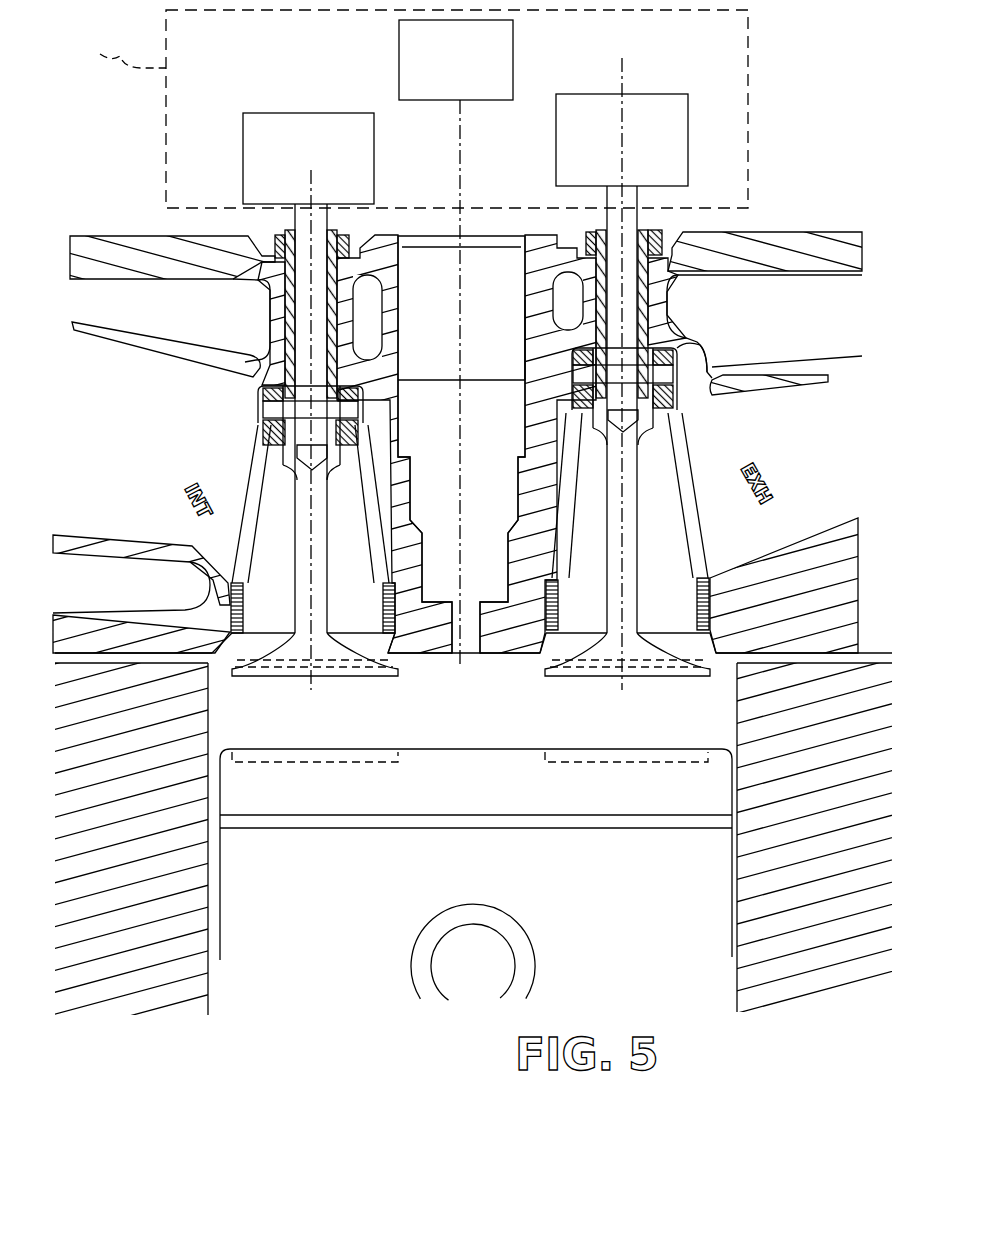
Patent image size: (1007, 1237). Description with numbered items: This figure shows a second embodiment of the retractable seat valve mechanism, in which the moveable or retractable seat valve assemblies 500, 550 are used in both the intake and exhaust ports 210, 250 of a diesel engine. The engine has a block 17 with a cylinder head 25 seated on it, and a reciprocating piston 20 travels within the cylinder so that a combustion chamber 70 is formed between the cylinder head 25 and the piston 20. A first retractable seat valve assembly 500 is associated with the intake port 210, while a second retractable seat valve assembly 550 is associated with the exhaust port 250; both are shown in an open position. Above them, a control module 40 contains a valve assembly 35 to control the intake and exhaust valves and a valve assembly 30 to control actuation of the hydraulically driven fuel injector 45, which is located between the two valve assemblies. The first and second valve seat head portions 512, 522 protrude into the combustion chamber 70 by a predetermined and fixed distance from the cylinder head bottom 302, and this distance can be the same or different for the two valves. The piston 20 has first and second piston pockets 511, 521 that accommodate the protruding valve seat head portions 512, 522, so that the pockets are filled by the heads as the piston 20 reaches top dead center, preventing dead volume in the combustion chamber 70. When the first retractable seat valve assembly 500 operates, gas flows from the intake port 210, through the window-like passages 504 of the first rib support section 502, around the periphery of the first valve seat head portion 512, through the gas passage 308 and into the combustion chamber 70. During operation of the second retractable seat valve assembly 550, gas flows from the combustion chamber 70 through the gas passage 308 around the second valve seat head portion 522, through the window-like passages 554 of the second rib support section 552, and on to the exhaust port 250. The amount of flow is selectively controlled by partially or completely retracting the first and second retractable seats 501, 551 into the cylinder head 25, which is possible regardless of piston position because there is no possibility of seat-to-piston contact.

The control module 40 is at (208, 40).
The valve assembly 35 is at (478, 56).
The valve assembly 30 is at (344, 155).
The cylinder head 25 is at (118, 252).
The intake port 210 is at (102, 398).
The exhaust port 250 is at (822, 407).
The fuel injector 45 is at (505, 506).
The cylinder head bottom 302 is at (490, 652).
The second retractable seat valve assembly 550 is at (528, 360).
The first retractable seat valve assembly 500 is at (200, 392).
The first retractable seat 501 is at (252, 450).
The first rib support section 502 is at (246, 474).
The window-like passages 504 is at (235, 540).
The second retractable seat 551 is at (693, 440).
The second rib support section 552 is at (692, 468).
The window-like passages 554 is at (700, 517).
The first valve seat head portion 512 is at (290, 656).
The second valve seat head portion 522 is at (642, 645).
The gas passage 308 is at (428, 660).
The combustion chamber 70 is at (470, 743).
The engine block 17 is at (745, 885).
The piston 20 is at (577, 888).
The first piston pocket 511 is at (324, 760).
The second piston pocket 521 is at (612, 758).